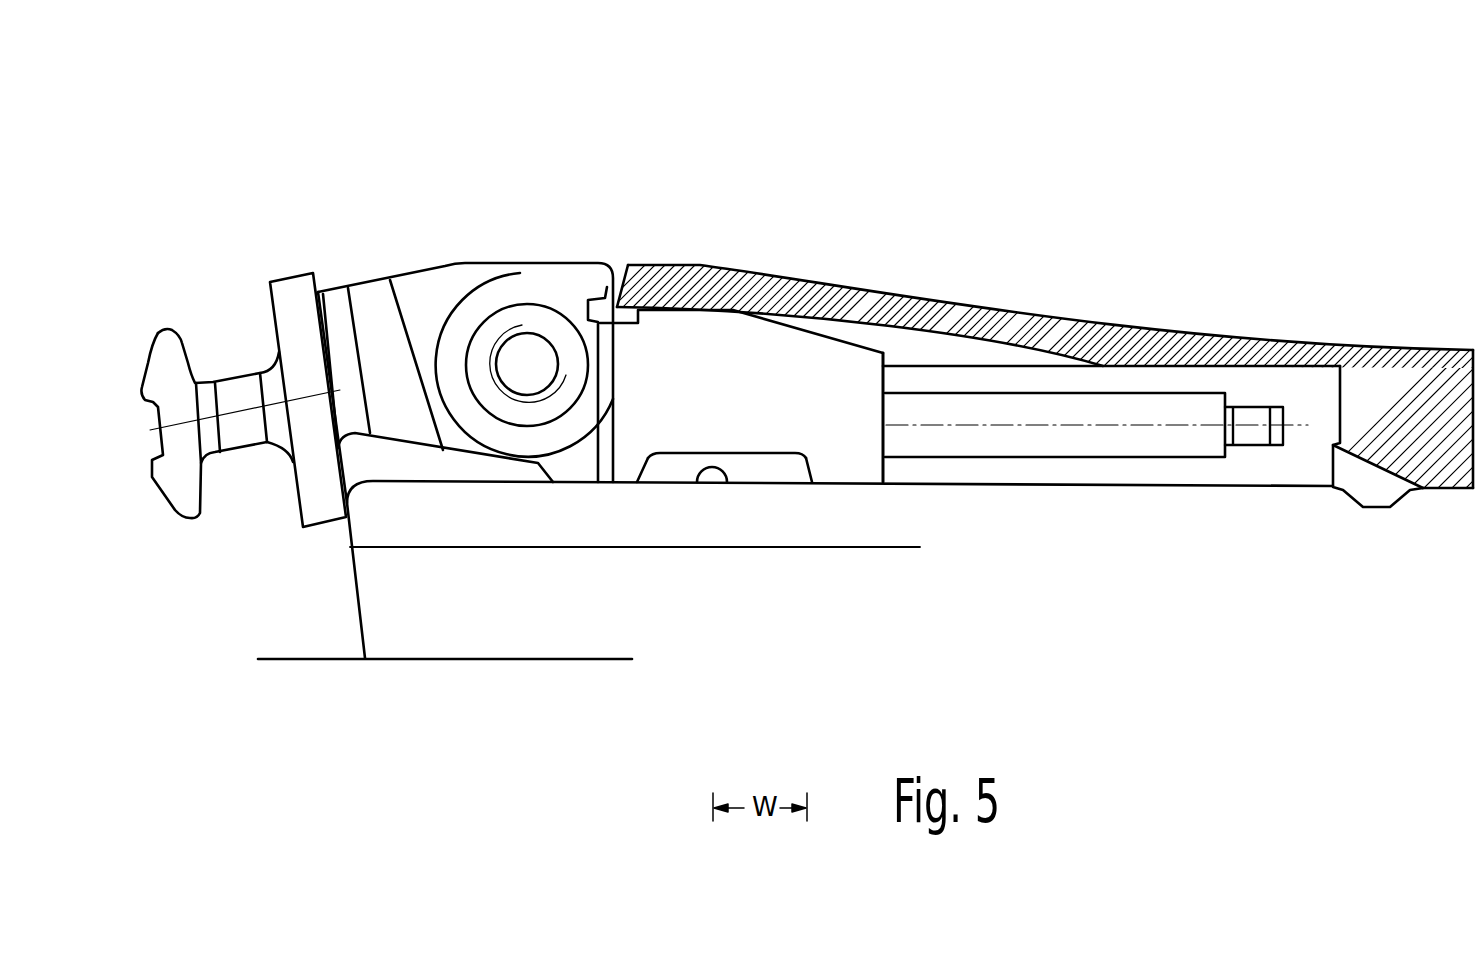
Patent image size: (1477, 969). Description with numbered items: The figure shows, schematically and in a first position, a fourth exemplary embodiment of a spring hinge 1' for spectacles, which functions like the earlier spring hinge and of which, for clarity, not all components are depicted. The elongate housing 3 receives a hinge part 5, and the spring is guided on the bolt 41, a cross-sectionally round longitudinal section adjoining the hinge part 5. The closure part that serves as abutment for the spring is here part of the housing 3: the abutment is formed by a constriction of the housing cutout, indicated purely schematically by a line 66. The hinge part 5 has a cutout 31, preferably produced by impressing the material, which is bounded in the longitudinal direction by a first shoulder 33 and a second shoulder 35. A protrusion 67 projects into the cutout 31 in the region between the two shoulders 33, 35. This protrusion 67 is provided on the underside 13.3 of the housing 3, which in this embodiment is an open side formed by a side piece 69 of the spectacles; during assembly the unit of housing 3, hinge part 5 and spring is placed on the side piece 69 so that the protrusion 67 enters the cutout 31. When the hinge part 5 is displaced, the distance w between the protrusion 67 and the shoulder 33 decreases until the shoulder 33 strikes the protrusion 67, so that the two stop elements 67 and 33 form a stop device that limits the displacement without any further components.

The spring hinge 1' is at (513, 272).
The spring-hinge housing 3 is at (1207, 342).
The hinge part 5 is at (873, 455).
The housing wall (underside) 13.3 is at (1240, 489).
The cutout 31 is at (783, 468).
The first shoulder 33 is at (813, 463).
The second shoulder 35 is at (641, 465).
The bolt 41 is at (1197, 440).
The line (constriction of the cutout) 66 is at (887, 459).
The protrusion 67 is at (737, 470).
The side piece 69 is at (543, 523).